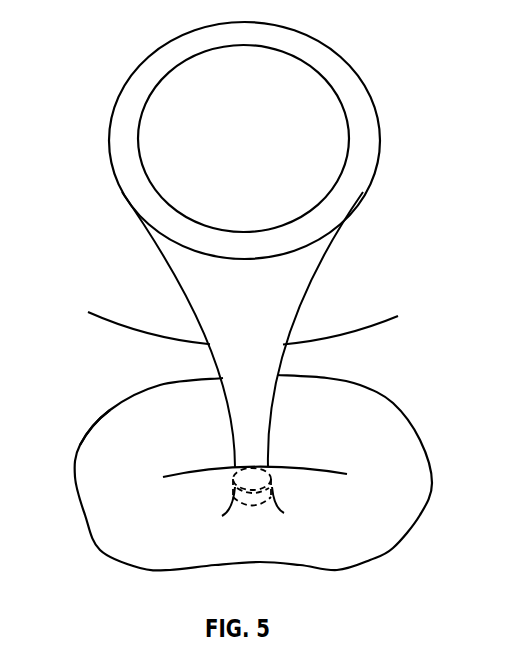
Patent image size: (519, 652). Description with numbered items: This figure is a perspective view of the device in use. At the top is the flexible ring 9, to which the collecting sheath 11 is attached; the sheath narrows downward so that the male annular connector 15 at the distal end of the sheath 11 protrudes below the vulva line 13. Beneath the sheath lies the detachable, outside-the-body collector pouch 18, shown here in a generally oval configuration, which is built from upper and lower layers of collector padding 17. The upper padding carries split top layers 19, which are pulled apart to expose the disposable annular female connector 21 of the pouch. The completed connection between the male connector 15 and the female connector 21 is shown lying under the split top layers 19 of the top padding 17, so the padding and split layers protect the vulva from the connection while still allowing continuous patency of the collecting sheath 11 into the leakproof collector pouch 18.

The flexible ring 9 is at (367, 85).
The collecting sheath 11 is at (180, 278).
The vulva line 13 is at (382, 322).
The male annular connector 15 is at (270, 475).
The collector padding 17 is at (430, 485).
The collector pouch 18 is at (85, 418).
The split top layers 19 is at (308, 467).
The female annular connector 21 is at (245, 503).